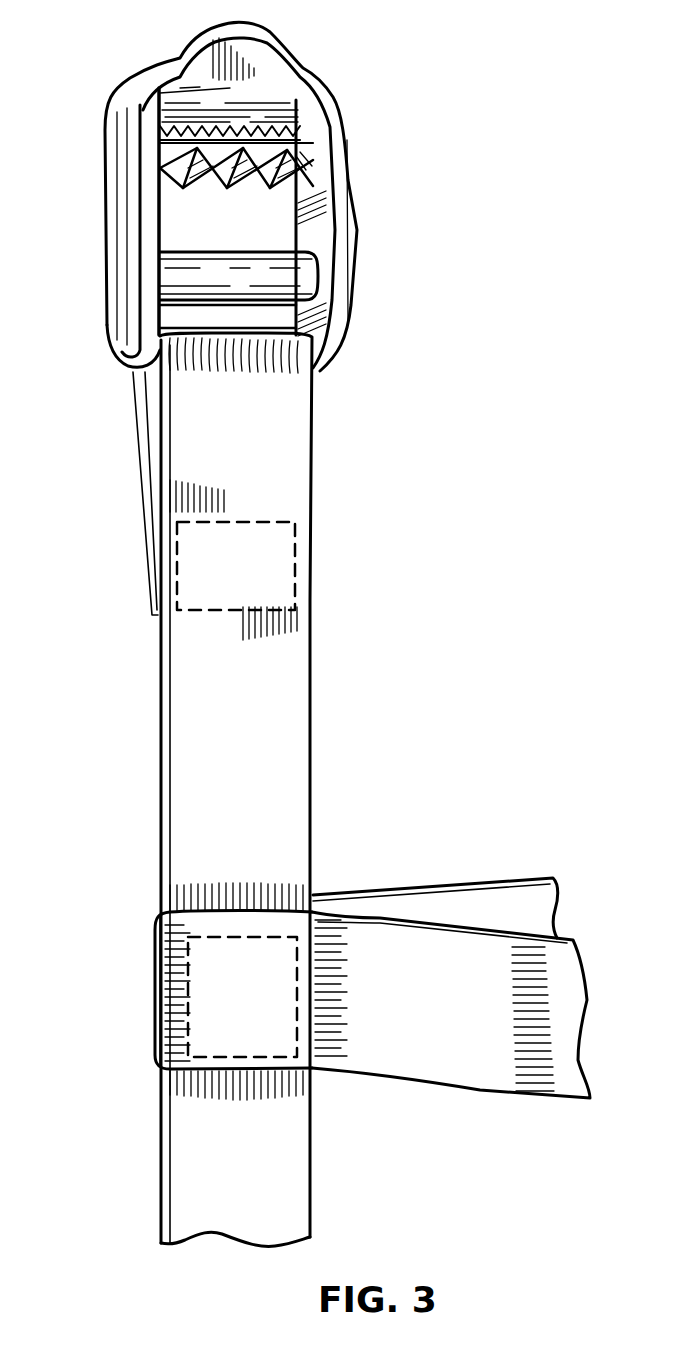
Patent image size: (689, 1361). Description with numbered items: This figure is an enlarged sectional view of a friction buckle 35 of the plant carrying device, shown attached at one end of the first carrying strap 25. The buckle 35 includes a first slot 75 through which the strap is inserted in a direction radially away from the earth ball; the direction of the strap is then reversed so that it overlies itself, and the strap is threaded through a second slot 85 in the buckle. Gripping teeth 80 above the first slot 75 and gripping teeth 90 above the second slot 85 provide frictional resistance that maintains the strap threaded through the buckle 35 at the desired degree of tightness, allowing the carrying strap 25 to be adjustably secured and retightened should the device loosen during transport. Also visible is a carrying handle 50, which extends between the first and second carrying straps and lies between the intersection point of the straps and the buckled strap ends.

The buckle 35 is at (280, 68).
The gripping teeth 90 is at (163, 115).
The second slot 85 is at (290, 112).
The gripping teeth 80 is at (163, 168).
The first slot 75 is at (277, 223).
The first carrying strap 25 is at (296, 670).
The carrying handle 50 is at (439, 1003).